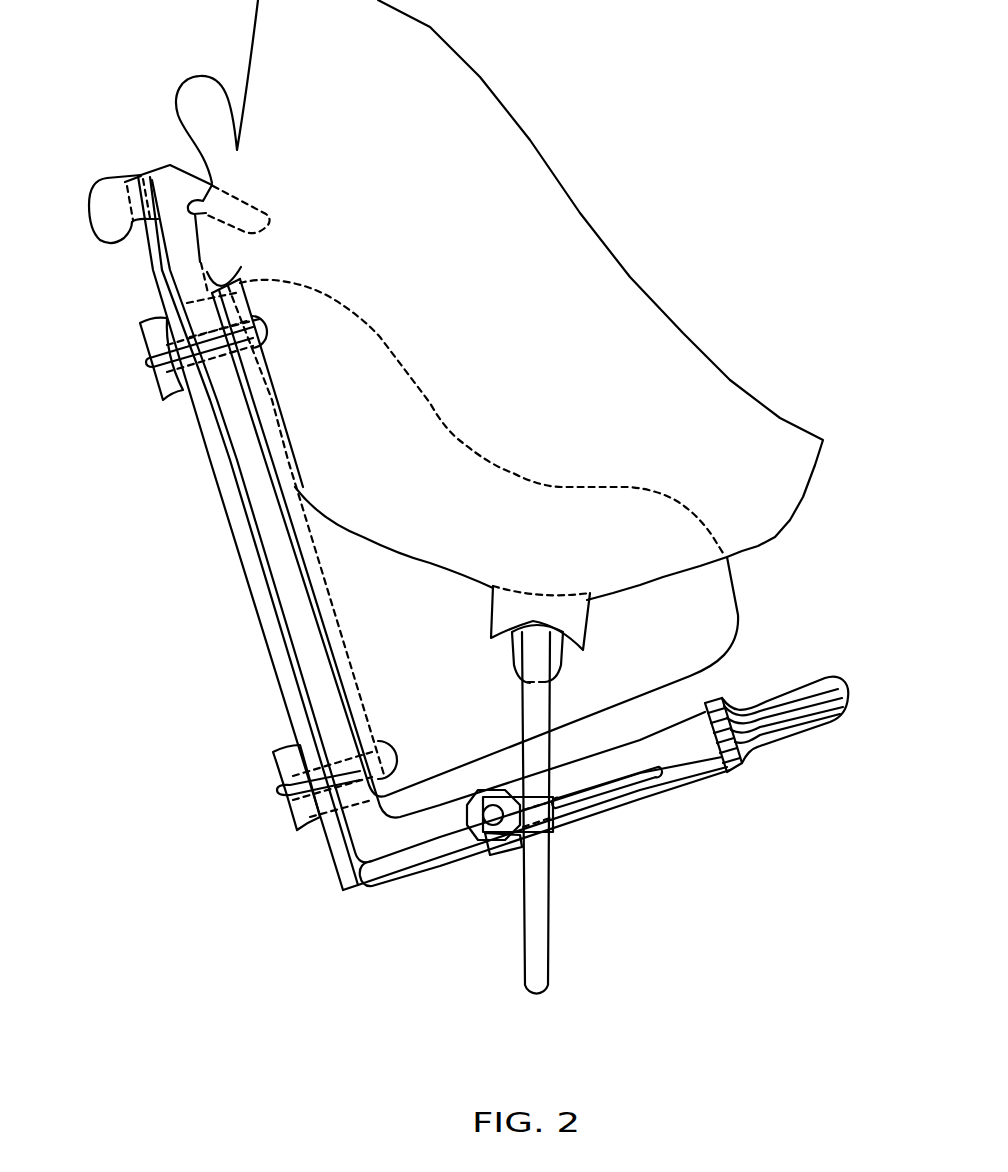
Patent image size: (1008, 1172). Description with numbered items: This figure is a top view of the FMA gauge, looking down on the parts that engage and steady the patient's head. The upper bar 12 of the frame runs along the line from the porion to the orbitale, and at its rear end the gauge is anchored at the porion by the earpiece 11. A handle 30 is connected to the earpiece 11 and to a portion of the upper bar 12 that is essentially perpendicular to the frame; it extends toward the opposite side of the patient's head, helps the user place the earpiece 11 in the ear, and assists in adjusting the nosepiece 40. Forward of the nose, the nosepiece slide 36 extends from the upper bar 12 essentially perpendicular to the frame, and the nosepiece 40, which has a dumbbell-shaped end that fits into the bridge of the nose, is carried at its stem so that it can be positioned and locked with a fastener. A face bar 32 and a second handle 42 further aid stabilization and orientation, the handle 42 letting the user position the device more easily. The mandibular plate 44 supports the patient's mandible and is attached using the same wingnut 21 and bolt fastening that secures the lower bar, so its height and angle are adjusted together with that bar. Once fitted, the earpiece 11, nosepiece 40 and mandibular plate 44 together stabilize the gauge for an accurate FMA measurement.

The earpiece 11 is at (268, 216).
The upper bar 12 is at (280, 610).
The wingnut 21 is at (146, 362).
The handle 30 is at (92, 220).
The face bar 32 is at (682, 783).
The nosepiece slide 36 is at (596, 805).
The nosepiece 40 is at (524, 699).
The handle 42 is at (848, 694).
The mandibular plate 44 is at (738, 620).